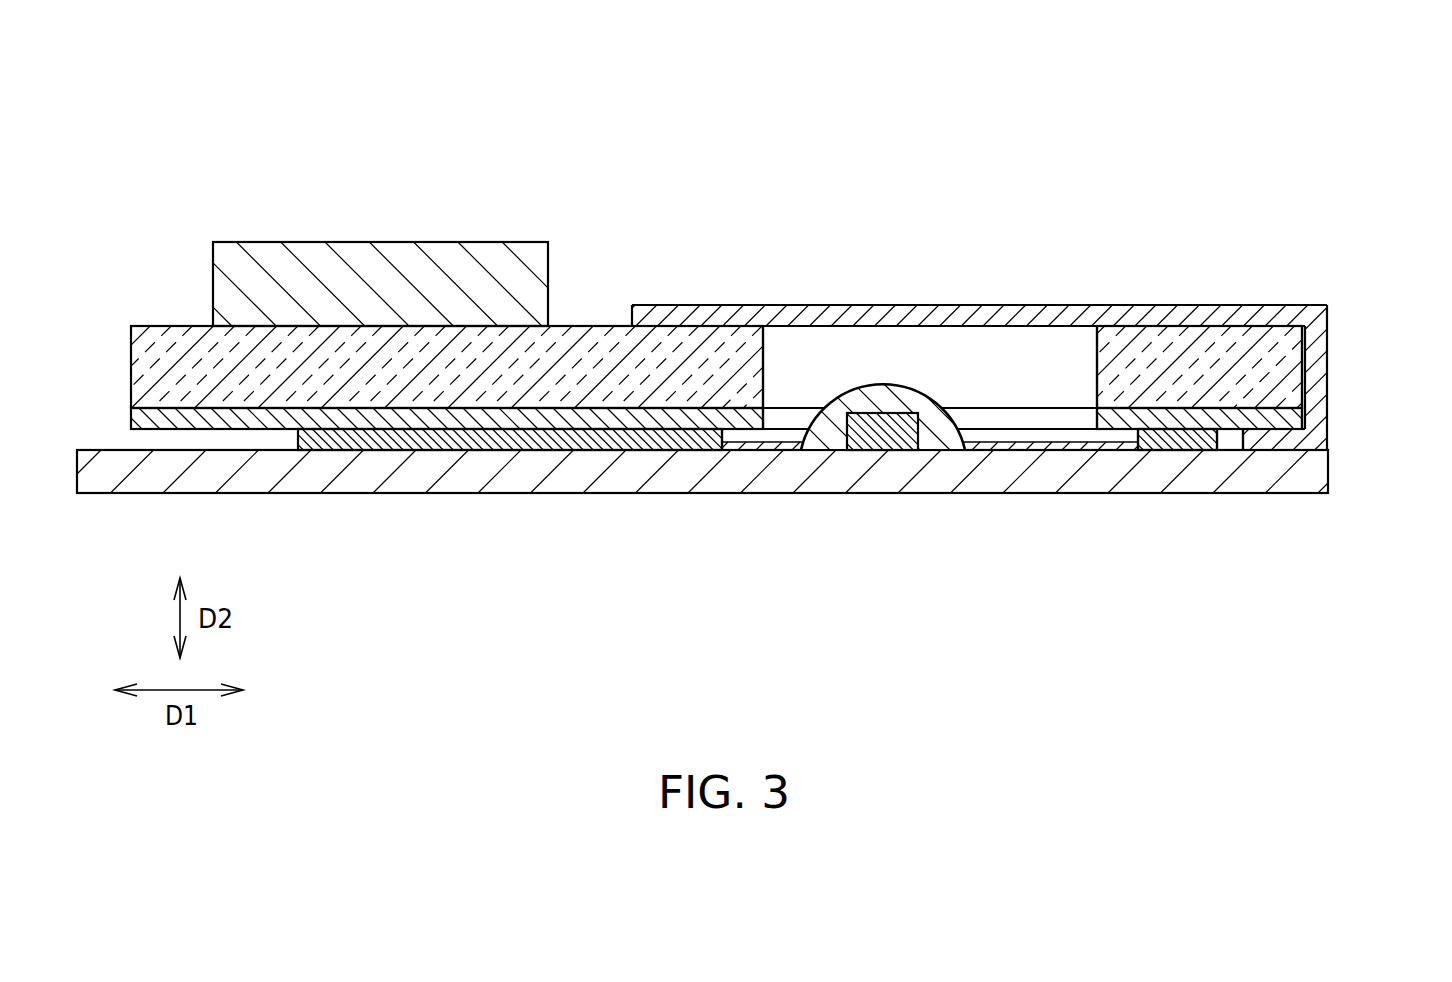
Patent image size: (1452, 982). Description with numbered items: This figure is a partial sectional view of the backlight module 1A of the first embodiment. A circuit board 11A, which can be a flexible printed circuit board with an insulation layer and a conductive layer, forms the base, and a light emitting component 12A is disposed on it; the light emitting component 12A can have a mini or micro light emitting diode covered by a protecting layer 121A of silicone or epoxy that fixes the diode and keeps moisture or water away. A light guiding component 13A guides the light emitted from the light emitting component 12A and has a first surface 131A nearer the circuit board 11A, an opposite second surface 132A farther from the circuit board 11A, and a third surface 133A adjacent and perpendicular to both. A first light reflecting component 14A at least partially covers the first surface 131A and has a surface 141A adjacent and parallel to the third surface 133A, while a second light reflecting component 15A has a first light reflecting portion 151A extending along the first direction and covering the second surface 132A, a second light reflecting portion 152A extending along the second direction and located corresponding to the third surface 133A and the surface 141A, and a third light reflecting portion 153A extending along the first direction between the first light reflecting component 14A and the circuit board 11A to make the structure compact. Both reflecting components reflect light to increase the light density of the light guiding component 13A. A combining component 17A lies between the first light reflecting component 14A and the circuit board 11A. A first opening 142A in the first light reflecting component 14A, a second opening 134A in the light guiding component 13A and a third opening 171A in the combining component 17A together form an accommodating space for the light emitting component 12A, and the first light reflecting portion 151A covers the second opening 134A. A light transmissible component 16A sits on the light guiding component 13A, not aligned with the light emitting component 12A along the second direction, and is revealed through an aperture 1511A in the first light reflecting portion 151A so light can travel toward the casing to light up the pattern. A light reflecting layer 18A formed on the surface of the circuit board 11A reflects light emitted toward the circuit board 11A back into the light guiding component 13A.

The backlight module 1A is at (205, 127).
The circuit board 11A is at (778, 478).
The light emitting component 12A is at (866, 378).
The protecting layer 121A is at (913, 398).
The light guiding component 13A is at (718, 375).
The first surface 131A is at (1187, 406).
The second surface 132A is at (1130, 323).
The third surface 133A is at (1273, 433).
The second opening 134A is at (801, 338).
The first light reflecting component 14A is at (1152, 447).
The surface 141A is at (1287, 453).
The first opening 142A is at (1042, 413).
The second light reflecting component 15A is at (1021, 311).
The first light reflecting portion 151A is at (967, 249).
The aperture 1511A is at (620, 303).
The second light reflecting portion 152A is at (1318, 343).
The third light reflecting portion 153A is at (1300, 440).
The light transmissible component 16A is at (263, 248).
The combining component 17A is at (1173, 433).
The third opening 171A is at (1083, 430).
The light reflecting layer 18A is at (1020, 446).